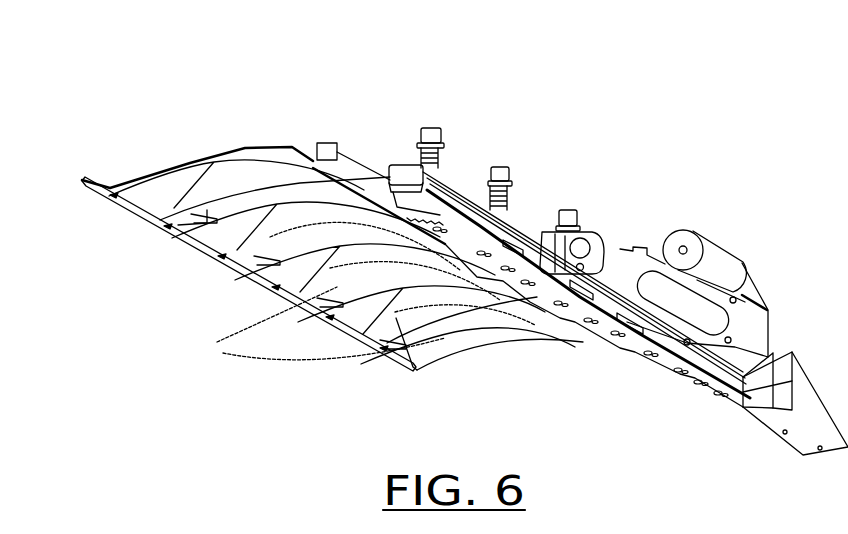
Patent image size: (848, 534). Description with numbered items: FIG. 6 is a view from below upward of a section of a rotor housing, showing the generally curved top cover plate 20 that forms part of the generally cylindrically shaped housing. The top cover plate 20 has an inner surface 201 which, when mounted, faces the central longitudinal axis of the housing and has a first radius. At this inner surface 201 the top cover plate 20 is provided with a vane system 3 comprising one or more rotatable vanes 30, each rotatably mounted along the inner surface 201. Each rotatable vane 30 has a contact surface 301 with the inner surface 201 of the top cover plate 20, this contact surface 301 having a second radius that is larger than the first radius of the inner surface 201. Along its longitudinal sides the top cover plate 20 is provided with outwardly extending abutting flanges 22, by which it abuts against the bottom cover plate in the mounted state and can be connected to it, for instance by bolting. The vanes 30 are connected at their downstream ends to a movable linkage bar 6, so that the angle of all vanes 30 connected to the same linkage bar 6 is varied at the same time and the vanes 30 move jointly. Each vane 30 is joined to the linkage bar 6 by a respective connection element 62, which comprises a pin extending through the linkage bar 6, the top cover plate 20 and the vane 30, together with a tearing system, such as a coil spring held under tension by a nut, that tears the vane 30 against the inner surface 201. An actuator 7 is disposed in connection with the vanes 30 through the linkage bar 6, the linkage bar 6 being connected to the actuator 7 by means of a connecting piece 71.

The top cover plate 20 is at (248, 82).
The inner surface 201 is at (162, 200).
The contact surface 301 is at (277, 250).
The rotatable vanes 30 is at (360, 328).
The vane system 3 is at (567, 347).
The abutting flanges 22 is at (124, 205).
The movable linkage bar 6 is at (458, 193).
The connection element 62 is at (572, 210).
The connecting piece 71 is at (597, 232).
The actuator 7 is at (765, 281).